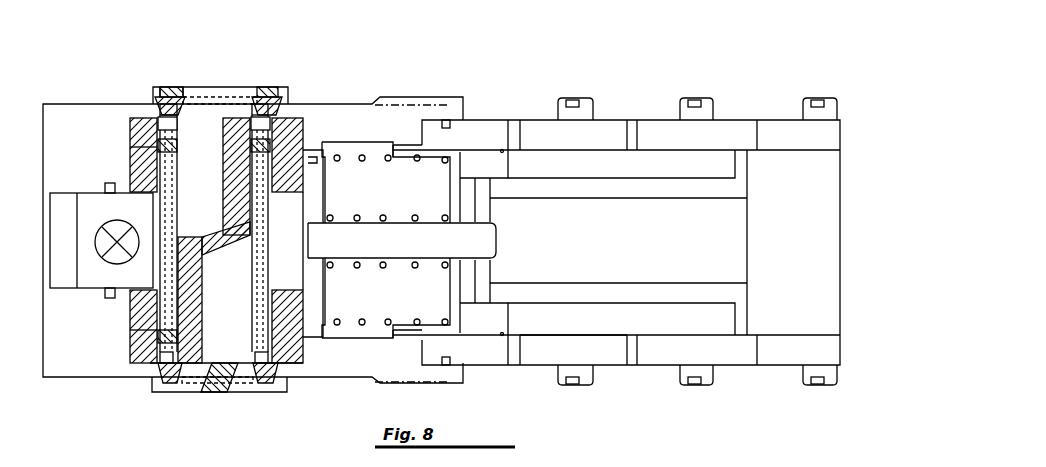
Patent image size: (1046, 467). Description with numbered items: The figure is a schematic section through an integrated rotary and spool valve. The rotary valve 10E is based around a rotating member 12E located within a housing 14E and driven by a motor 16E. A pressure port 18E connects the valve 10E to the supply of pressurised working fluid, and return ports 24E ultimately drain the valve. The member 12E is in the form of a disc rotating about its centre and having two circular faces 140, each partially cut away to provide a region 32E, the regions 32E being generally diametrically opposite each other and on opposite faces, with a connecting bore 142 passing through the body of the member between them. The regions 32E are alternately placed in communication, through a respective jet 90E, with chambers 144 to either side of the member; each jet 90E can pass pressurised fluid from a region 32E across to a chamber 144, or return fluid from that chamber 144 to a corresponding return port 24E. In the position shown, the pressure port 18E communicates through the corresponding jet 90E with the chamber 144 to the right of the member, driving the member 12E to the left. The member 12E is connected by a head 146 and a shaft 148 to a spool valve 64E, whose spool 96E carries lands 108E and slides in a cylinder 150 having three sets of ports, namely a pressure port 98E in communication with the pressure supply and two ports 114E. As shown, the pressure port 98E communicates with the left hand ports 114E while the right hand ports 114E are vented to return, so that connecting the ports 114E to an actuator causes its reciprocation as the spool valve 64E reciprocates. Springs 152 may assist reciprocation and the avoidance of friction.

The rotary valve 10E is at (126, 70).
The housing 14E is at (193, 108).
The circular faces 140 is at (177, 163).
The jet 90E is at (278, 147).
The head 146 is at (304, 156).
The springs 152 is at (363, 155).
The lands 108E is at (500, 164).
The motor 16E is at (91, 203).
The region 32E is at (232, 182).
The connecting bore 142 is at (198, 250).
The shaft 148 is at (402, 240).
The cylinder 150 is at (552, 330).
The spool 96E is at (571, 295).
The chambers 144 is at (137, 310).
The return ports 24E is at (175, 385).
The pressure port 18E is at (220, 393).
The rotating member 12E is at (229, 355).
The ports 114E is at (519, 353).
The pressure port 98E is at (632, 363).
The spool valve 64E is at (647, 330).